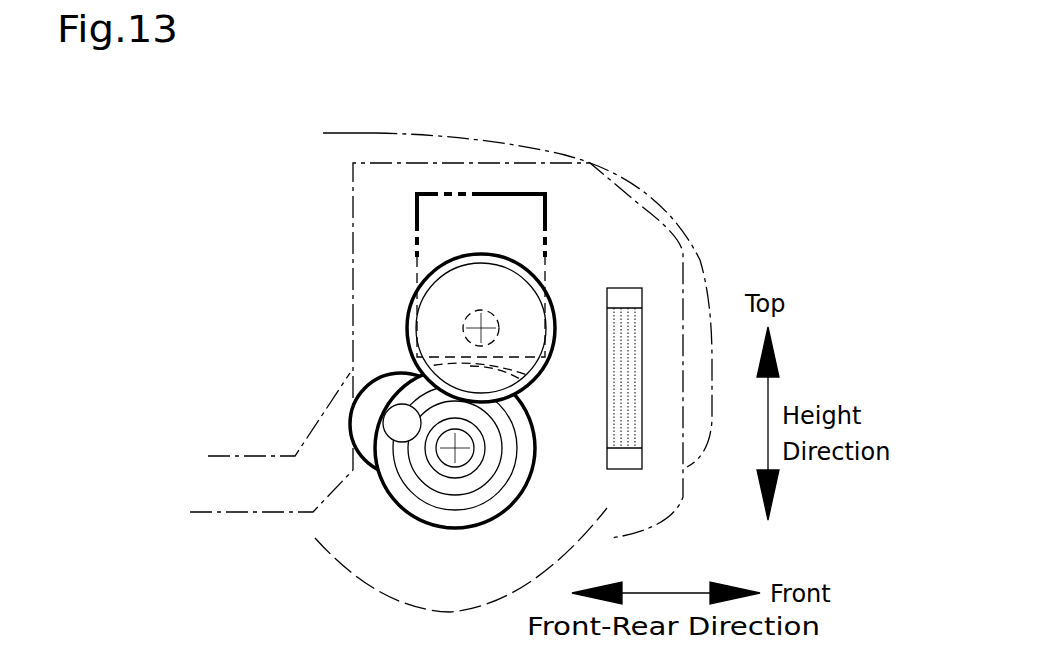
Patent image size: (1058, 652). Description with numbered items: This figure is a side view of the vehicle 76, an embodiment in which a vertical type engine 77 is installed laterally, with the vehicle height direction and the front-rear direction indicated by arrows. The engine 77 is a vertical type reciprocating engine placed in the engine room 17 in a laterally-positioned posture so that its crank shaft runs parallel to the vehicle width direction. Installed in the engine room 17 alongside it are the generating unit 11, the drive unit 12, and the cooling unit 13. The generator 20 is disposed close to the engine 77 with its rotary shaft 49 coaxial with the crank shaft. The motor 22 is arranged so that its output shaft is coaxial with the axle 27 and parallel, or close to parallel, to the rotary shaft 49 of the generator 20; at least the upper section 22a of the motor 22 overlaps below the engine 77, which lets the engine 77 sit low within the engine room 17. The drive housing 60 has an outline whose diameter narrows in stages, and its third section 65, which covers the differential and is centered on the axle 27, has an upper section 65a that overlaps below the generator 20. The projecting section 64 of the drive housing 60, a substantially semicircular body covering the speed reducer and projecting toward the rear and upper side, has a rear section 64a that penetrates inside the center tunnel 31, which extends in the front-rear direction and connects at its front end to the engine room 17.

The generating unit 11 is at (578, 175).
The drive unit 12 is at (354, 550).
The cooling unit 13 is at (659, 310).
The engine room 17 is at (427, 160).
The generator 20 is at (433, 272).
The motor 22 is at (538, 450).
The upper section of the motor 22a is at (536, 383).
The axle 27 is at (455, 455).
The center tunnel 31 is at (247, 452).
The rotary shaft 49 is at (497, 322).
The drive housing 60 is at (421, 542).
The projecting section 64 is at (372, 402).
The rear section of the projecting section 64a is at (349, 419).
The third section 65 is at (495, 483).
The upper section of the third section 65a is at (500, 410).
The vehicle 76 is at (258, 146).
The engine 77 is at (413, 210).